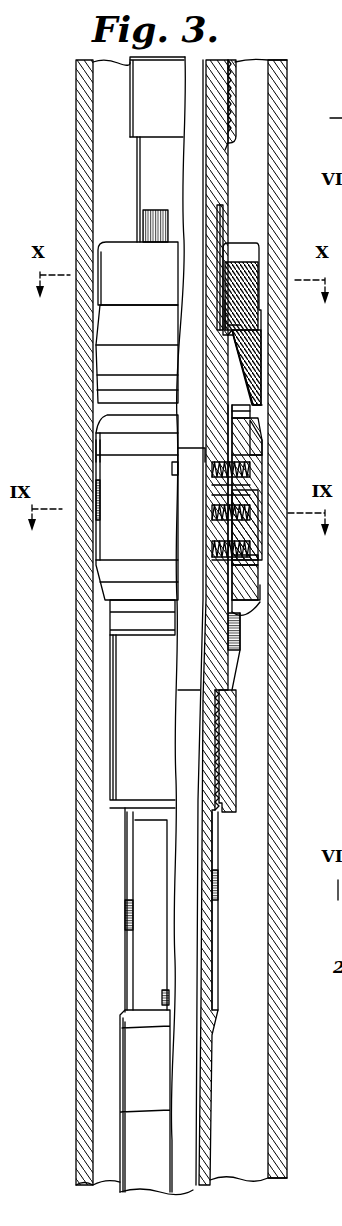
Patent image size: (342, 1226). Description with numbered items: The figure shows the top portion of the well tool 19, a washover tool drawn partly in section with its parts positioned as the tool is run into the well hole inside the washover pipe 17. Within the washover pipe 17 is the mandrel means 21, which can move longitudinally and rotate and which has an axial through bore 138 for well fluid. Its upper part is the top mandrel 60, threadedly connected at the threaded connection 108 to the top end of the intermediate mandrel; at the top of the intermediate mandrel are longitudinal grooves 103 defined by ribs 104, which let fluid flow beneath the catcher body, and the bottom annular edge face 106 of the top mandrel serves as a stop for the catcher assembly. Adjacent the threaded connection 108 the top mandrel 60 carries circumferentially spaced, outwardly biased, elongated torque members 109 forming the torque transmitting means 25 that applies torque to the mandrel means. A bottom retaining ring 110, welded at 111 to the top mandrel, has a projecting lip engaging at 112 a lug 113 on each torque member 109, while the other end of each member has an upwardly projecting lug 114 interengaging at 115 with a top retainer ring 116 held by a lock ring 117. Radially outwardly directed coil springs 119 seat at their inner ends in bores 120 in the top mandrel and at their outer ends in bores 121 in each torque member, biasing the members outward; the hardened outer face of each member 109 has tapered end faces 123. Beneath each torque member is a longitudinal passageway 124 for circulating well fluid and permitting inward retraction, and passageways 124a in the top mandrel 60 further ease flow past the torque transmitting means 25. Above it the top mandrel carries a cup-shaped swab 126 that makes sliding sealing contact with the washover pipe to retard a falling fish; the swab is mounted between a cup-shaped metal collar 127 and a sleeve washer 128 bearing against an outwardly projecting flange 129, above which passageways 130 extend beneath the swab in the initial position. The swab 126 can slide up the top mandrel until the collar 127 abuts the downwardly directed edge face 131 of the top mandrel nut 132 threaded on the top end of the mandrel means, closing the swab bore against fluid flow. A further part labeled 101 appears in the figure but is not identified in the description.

The washover pipe 17 is at (76, 692).
The well tool means 19 is at (98, 772).
The mandrel means 21 is at (120, 106).
The torque transmitting means 25 is at (108, 479).
The top mandrel 60 is at (148, 172).
The mandrel 101 is at (207, 1168).
The longitudinal grooves 103 is at (140, 927).
The ribs 104 is at (165, 972).
The bottom annular edge face 106 is at (228, 810).
The threaded connection 108 is at (216, 744).
The torque members 109 is at (97, 497).
The bottom retaining ring 110 is at (252, 588).
The weld 111 is at (242, 604).
The engagement 112 is at (250, 573).
The lug 113 is at (232, 565).
The upwardly projecting lug 114 is at (205, 455).
The interengagement 115 is at (250, 453).
The top retainer ring 116 is at (257, 437).
The lock ring 117 is at (243, 413).
The coil springs 119 is at (212, 489).
The bores 120 is at (212, 515).
The bores 121 is at (244, 470).
The tapered end faces 123 is at (96, 462).
The passageway 124 is at (233, 492).
The passageways 124a is at (173, 470).
The swab 126 is at (100, 362).
The cup-shaped metal collar 127 is at (258, 251).
The sleeve washer 128 is at (227, 316).
The flange 129 is at (226, 332).
The passageways 130 is at (218, 268).
The edge face 131 is at (228, 140).
The top mandrel nut 132 is at (236, 95).
The axial through bore 138 is at (198, 374).